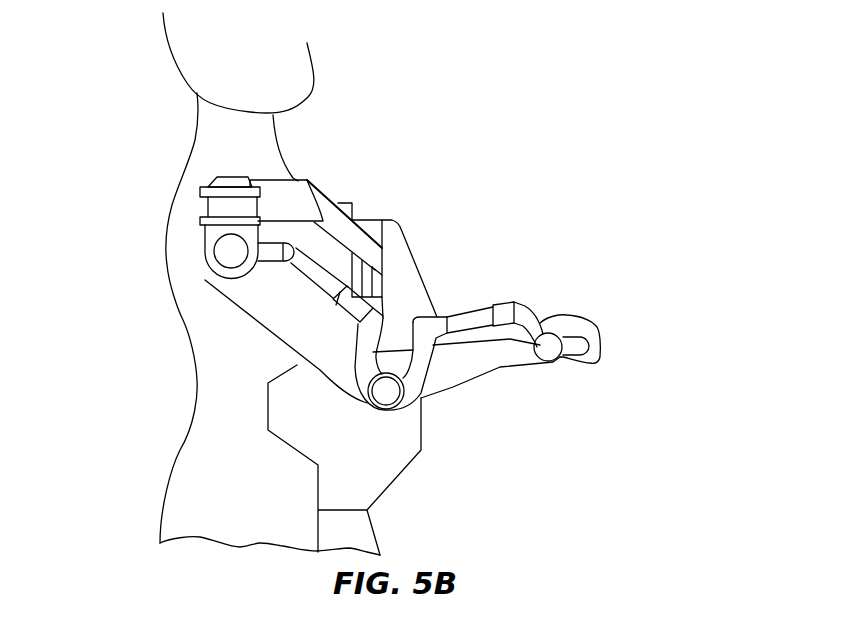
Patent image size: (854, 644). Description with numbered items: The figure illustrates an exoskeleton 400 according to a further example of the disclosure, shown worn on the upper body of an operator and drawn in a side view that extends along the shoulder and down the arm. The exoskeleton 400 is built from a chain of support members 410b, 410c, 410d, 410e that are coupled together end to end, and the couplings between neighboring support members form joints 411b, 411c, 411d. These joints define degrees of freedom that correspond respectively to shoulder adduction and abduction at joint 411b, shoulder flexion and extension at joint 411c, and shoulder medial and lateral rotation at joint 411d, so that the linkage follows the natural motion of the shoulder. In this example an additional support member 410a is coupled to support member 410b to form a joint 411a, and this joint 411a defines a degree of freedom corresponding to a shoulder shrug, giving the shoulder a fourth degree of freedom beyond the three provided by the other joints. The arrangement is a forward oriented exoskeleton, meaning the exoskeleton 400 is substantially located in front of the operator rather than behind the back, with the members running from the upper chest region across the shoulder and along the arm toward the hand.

The exoskeleton 400 is at (458, 110).
The support member 410a is at (376, 220).
The support member 410b is at (321, 212).
The support member 410c is at (206, 233).
The support member 410d is at (286, 263).
The support member 410e is at (353, 338).
The joint 411a is at (386, 237).
The joint 411b is at (188, 182).
The joint 411c is at (190, 267).
The joint 411d is at (316, 306).